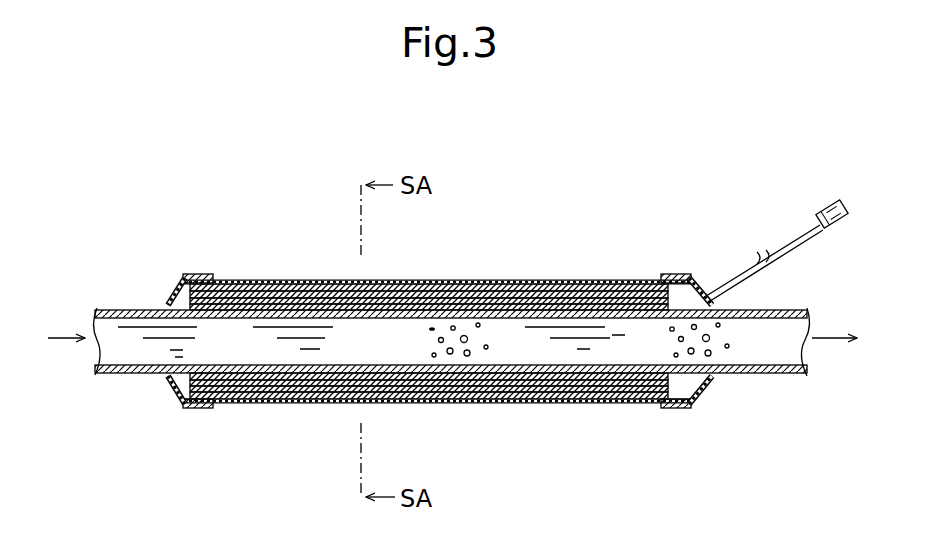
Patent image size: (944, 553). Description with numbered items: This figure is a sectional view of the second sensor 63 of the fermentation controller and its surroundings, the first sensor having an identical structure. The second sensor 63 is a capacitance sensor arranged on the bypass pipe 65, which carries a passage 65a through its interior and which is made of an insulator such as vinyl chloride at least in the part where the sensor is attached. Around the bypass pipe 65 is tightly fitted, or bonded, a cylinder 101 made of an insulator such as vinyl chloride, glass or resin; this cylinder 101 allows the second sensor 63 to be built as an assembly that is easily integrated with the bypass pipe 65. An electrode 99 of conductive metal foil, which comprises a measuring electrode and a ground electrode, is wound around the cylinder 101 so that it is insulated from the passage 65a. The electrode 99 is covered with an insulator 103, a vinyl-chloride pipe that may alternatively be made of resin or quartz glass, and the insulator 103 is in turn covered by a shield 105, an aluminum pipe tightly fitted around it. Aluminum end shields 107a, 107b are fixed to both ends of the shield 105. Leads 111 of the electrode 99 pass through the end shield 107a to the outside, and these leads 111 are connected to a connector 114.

The second sensor 63 is at (457, 273).
The bypass pipe 65 is at (121, 307).
The passage 65a is at (127, 356).
The electrode 99 is at (555, 403).
The cylinder 101 is at (625, 403).
The insulator 103 is at (605, 282).
The shield 105 is at (550, 282).
The end shield 107a is at (673, 280).
The end shield 107b is at (175, 290).
The leads 111 is at (780, 245).
The connector 114 is at (843, 225).